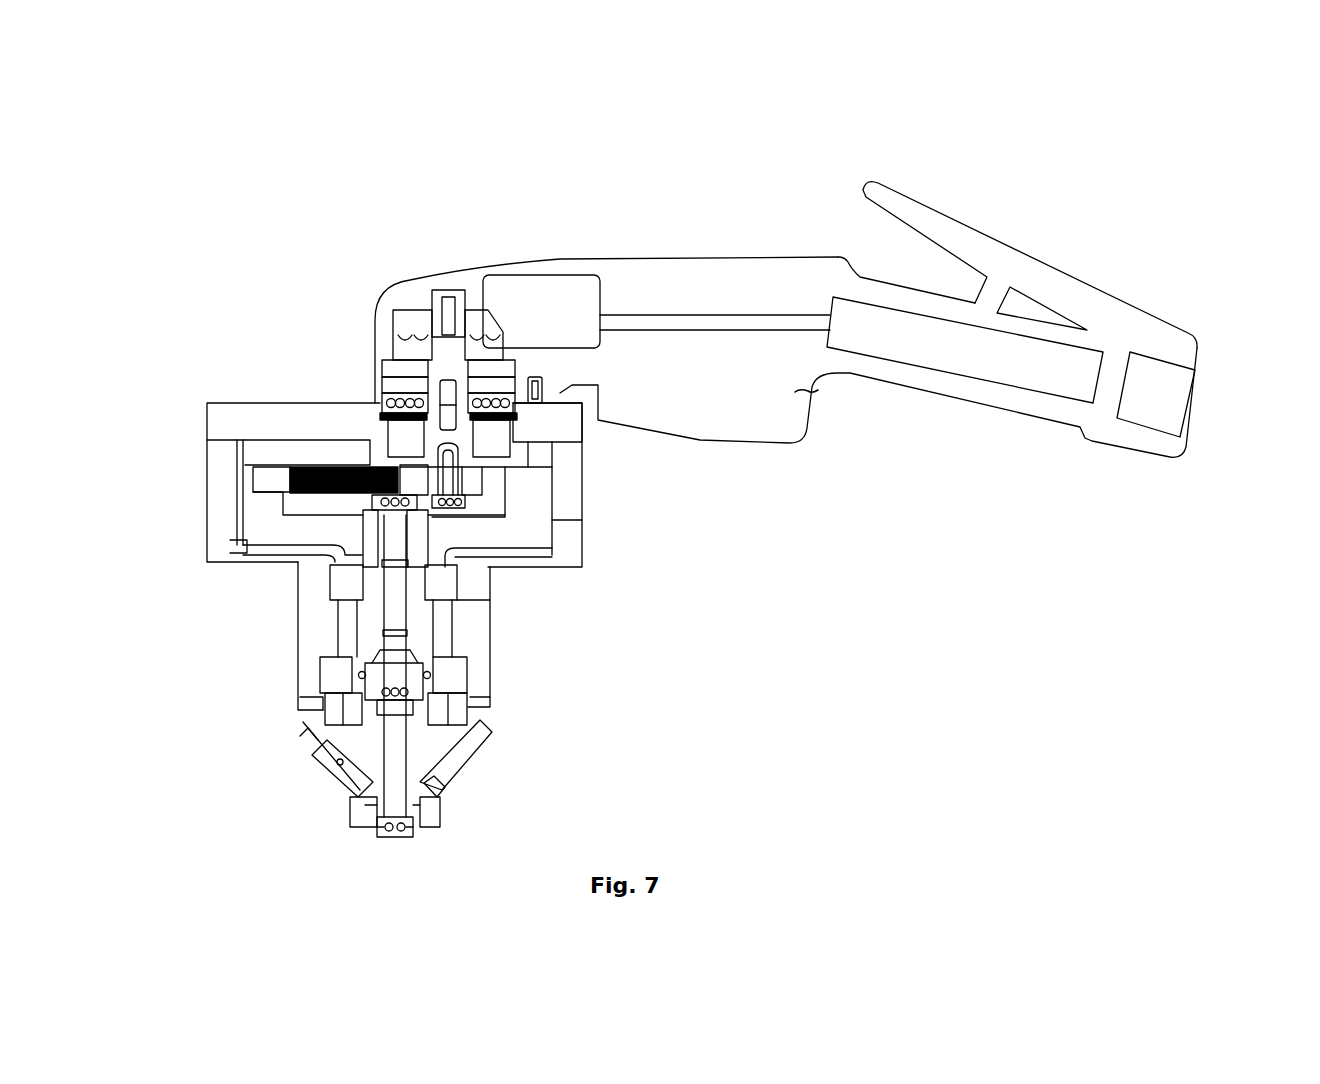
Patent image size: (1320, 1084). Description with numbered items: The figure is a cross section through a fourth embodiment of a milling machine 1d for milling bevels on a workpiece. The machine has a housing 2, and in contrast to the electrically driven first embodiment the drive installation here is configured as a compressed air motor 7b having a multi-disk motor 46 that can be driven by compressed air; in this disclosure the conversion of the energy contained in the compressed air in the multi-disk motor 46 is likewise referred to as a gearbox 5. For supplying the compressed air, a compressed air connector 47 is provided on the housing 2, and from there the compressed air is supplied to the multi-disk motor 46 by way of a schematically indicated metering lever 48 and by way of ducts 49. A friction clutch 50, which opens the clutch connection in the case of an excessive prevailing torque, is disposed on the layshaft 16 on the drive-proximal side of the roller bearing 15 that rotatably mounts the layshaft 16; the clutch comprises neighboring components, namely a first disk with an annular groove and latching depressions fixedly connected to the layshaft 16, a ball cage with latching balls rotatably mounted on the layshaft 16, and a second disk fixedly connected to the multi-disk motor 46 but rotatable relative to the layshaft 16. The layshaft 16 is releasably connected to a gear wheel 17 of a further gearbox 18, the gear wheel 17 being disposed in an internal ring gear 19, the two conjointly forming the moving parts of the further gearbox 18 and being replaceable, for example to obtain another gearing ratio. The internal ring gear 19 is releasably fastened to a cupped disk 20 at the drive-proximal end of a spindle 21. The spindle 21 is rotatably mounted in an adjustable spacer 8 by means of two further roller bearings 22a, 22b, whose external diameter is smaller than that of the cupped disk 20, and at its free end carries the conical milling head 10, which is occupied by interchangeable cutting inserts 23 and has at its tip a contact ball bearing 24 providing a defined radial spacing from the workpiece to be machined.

The milling machine 1d is at (1178, 146).
The housing 2 is at (700, 257).
The gearbox 5 is at (437, 255).
The compressed air motor 7b is at (380, 341).
The spacer 8 is at (293, 655).
The milling head 10 is at (333, 840).
The roller bearing 15 is at (497, 437).
The layshaft 16 is at (447, 350).
The gear wheel 17 is at (492, 480).
The further gearbox 18 is at (305, 445).
The internal ring gear 19 is at (262, 477).
The cupped disk 20 is at (280, 532).
The spindle 21 is at (425, 627).
The roller bearing 22a is at (447, 587).
The roller bearing 22b is at (452, 675).
The cutting inserts 23 is at (465, 758).
The contact ball bearing 24 is at (437, 828).
The multi-disk motor 46 is at (425, 335).
The compressed air connector 47 is at (1190, 403).
The metering lever 48 is at (980, 243).
The ducts 49 is at (548, 292).
The friction clutch 50 is at (360, 356).